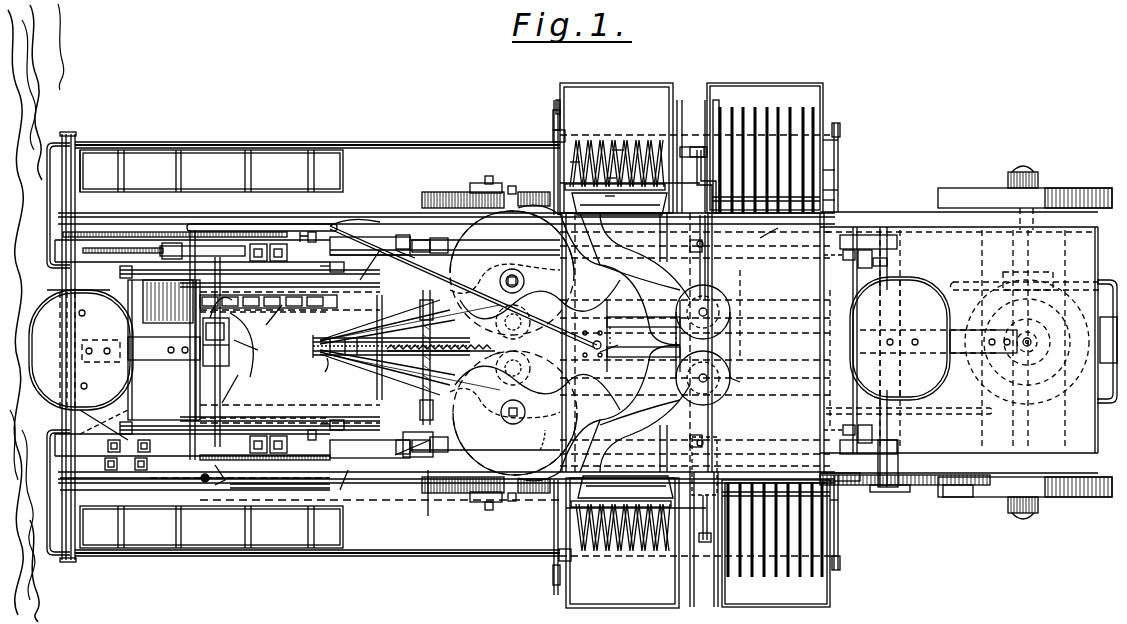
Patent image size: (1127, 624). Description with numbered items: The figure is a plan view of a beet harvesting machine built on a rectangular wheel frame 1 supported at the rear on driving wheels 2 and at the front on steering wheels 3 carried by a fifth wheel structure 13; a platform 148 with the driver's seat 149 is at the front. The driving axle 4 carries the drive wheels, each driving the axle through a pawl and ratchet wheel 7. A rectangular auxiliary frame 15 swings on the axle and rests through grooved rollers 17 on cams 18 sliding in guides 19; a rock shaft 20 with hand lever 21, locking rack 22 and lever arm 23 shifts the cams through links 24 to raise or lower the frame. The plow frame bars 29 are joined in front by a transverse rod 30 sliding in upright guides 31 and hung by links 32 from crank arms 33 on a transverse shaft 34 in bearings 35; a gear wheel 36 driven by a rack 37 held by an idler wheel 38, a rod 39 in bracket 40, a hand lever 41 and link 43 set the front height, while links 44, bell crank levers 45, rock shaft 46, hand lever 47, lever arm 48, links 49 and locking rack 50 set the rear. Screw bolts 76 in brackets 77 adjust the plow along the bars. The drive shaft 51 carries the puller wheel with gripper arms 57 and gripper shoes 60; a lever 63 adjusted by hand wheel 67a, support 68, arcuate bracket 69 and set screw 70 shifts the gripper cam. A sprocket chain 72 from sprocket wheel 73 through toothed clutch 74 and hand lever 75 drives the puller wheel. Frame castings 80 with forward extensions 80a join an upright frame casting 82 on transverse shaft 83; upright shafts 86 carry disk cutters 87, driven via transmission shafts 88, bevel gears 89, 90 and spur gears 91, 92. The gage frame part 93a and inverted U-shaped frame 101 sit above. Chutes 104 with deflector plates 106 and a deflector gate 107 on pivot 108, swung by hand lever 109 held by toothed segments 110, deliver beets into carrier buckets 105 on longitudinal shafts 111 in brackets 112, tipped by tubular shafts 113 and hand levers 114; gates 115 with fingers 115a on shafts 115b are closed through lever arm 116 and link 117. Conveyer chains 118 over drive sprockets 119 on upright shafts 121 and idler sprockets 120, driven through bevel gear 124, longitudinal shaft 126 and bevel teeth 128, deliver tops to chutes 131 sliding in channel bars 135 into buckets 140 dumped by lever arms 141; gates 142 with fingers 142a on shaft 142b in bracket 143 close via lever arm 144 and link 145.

The wheel frame 1 is at (365, 520).
The driving wheels 2 is at (272, 165).
The steering wheels 3 is at (988, 195).
The driving axle 4 is at (235, 383).
The ratchet wheel 7 is at (48, 342).
The fifth wheel structure 13 is at (990, 365).
The auxiliary frame 15 is at (343, 455).
The grooved rollers 17 is at (623, 342).
The cams 18 is at (682, 343).
The guides 19 is at (415, 236).
The rock shaft 20 is at (104, 427).
The hand lever 21 is at (285, 226).
The segmental locking rack 22 is at (170, 230).
The lever arm 23 is at (165, 480).
The links 24 is at (368, 228).
The longitudinal frame bars 29 is at (272, 345).
The transverse rod 30 is at (959, 342).
The upright guides 31 is at (870, 242).
The links 32 is at (848, 339).
The crank arms 33 is at (870, 346).
The transverse shaft 34 is at (887, 270).
The bearings 35 is at (885, 230).
The gear wheel 36 is at (908, 487).
The rack 37 is at (965, 497).
The grooved idler wheel 38 is at (878, 492).
The rearward extending rod 39 is at (840, 466).
The bracket 40 is at (372, 460).
The hand lever 41 is at (183, 482).
The link 43 is at (280, 490).
The links 44 is at (320, 428).
The bell crank levers 45 is at (290, 280).
The rock shaft 46 is at (128, 404).
The hand lever 47 is at (245, 262).
The lever arm 48 is at (250, 353).
The links 49 is at (250, 300).
The locking rack 50 is at (125, 253).
The supporting and driving shaft 51 is at (490, 184).
The gripper arms 57 is at (382, 380).
The gripper shoes 60 is at (318, 350).
The lever 63 is at (385, 266).
The hand wheel 67a is at (396, 524).
The support 68 is at (380, 245).
The arcuate bracket 69 is at (435, 238).
The set screw 70 is at (428, 502).
The sprocket chain 72 is at (272, 320).
The sprocket wheel 73 is at (232, 320).
The toothed clutch 74 is at (255, 350).
The hand lever 75 is at (239, 345).
The screw bolts 76 is at (335, 300).
The brackets 77 is at (312, 264).
The frame castings 80 is at (490, 250).
The forward extensions 80a is at (515, 413).
The upright frame casting 82 is at (745, 381).
The transverse shaft 83 is at (706, 262).
The upright shafts 86 is at (520, 293).
The disk cutters 87 is at (580, 262).
The transmission shafts 88 is at (516, 188).
The bevel gear 89 is at (505, 327).
The bevel gear 90 is at (534, 448).
The spur gear 91 is at (552, 175).
The spur gear 92 is at (465, 192).
The intermediate part 93a is at (312, 371).
The inverted U-shaped frame 101 is at (530, 336).
The chutes 104 is at (610, 195).
The carrier buckets 105 is at (635, 72).
The deflector plates 106 is at (532, 344).
The deflector gate 107 is at (628, 328).
The pivot 108 is at (624, 350).
The hand lever 109 is at (350, 230).
The toothed segments 110 is at (520, 541).
The longitudinal shafts 111 is at (683, 135).
The brackets 112 is at (75, 140).
The tubular shafts 113 is at (412, 143).
The hand lever 114 is at (80, 150).
The gates 115 is at (618, 148).
The fingers 115a is at (668, 565).
The shaft 115b is at (572, 160).
The lever arm 116 is at (553, 110).
The link 117 is at (557, 110).
The endless conveyer chains 118 is at (730, 305).
The drive sprockets 119 is at (718, 296).
The idler sprockets 120 is at (482, 355).
The upright shafts 121 is at (770, 333).
The bevel gear 124 is at (784, 225).
The longitudinal shaft 126 is at (708, 180).
The bevel gear teeth 128 is at (472, 183).
The chutes 131 is at (764, 311).
The channel bars 135 is at (835, 360).
The buckets 140 is at (862, 590).
The lever arms 141 is at (47, 230).
The gates 142 is at (805, 130).
The fingers 142a is at (835, 130).
The shaft 142b is at (835, 192).
The bracket 143 is at (722, 468).
The lever arm 144 is at (720, 165).
The link 145 is at (708, 105).
The platform 148 is at (1052, 473).
The seat 149 is at (933, 338).